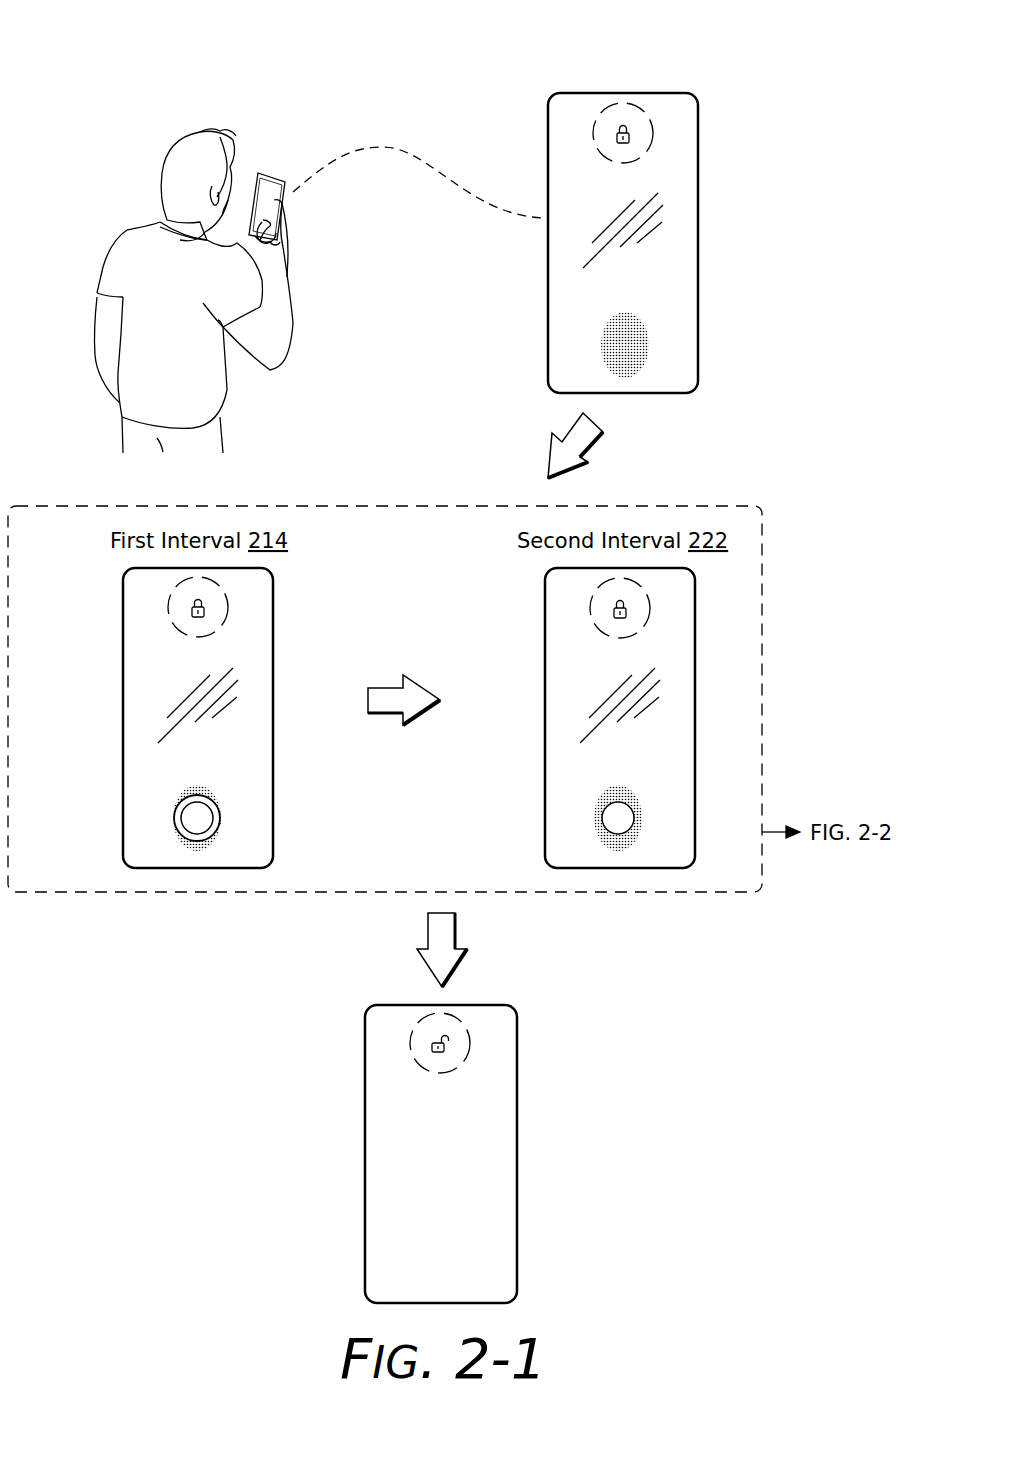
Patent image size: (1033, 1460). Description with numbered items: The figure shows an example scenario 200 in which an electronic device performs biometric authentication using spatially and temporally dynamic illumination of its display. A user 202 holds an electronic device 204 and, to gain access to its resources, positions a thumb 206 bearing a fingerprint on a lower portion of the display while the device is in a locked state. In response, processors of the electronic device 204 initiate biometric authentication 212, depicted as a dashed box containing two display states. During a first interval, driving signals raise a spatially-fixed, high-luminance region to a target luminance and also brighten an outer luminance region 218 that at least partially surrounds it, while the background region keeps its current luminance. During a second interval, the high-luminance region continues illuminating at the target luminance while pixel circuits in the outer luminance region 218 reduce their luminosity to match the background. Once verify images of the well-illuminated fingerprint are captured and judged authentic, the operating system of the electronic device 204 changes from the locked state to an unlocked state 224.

The example scenario 200 is at (752, 55).
The user 202 is at (177, 140).
The electronic device 204 is at (270, 172).
The thumb 206 is at (265, 228).
The biometric authentication 212 is at (120, 893).
The outer luminance region 218 is at (218, 805).
The unlocked state 224 is at (411, 1041).